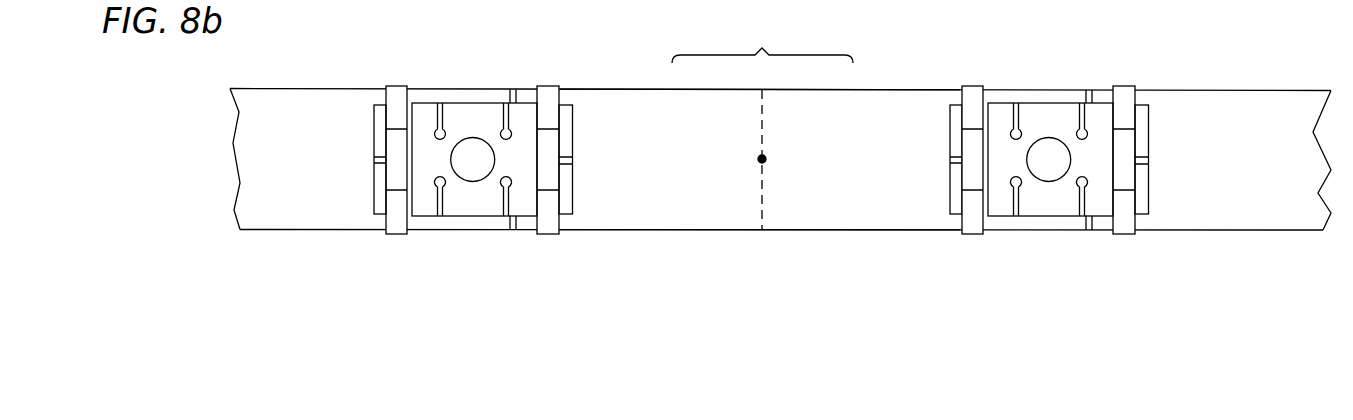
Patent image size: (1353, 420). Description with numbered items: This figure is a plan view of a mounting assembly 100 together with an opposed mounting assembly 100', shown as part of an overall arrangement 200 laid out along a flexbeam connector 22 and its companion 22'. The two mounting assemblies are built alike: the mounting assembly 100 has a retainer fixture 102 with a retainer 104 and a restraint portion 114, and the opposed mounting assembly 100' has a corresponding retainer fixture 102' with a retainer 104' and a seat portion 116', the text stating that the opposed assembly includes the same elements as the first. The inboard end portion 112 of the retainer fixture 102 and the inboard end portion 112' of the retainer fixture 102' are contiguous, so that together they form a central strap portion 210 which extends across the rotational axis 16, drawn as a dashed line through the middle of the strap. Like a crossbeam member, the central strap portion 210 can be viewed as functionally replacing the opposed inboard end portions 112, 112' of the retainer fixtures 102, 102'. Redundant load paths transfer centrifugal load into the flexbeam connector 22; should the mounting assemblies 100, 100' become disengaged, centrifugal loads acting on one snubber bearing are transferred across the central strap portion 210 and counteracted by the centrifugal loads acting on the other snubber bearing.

The assembly of band with clips 200 is at (890, 83).
The central strap portion 210 is at (762, 43).
The inboard end portion 112' is at (661, 82).
The inboard end portion 112 is at (861, 82).
The rotational axis 16 is at (766, 158).
The retainer fixture 102' is at (661, 252).
The retainer fixture 102 is at (861, 252).
The first band end 22' is at (273, 183).
The flexbeam connector 22 is at (1264, 184).
The opposed mounting assembly 100' is at (414, 160).
The mounting assembly 100 is at (1096, 160).
The restraint portion 114 is at (378, 183).
The seat portion 116' is at (484, 96).
The retainer 104' is at (474, 190).
The retainer 104 is at (1050, 190).